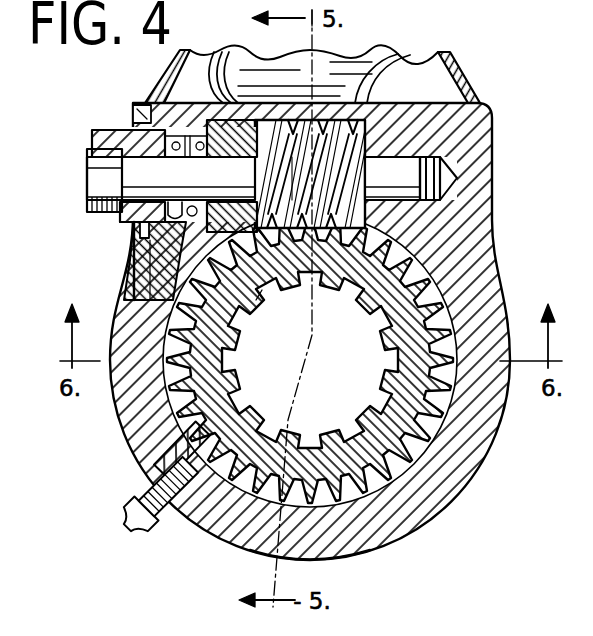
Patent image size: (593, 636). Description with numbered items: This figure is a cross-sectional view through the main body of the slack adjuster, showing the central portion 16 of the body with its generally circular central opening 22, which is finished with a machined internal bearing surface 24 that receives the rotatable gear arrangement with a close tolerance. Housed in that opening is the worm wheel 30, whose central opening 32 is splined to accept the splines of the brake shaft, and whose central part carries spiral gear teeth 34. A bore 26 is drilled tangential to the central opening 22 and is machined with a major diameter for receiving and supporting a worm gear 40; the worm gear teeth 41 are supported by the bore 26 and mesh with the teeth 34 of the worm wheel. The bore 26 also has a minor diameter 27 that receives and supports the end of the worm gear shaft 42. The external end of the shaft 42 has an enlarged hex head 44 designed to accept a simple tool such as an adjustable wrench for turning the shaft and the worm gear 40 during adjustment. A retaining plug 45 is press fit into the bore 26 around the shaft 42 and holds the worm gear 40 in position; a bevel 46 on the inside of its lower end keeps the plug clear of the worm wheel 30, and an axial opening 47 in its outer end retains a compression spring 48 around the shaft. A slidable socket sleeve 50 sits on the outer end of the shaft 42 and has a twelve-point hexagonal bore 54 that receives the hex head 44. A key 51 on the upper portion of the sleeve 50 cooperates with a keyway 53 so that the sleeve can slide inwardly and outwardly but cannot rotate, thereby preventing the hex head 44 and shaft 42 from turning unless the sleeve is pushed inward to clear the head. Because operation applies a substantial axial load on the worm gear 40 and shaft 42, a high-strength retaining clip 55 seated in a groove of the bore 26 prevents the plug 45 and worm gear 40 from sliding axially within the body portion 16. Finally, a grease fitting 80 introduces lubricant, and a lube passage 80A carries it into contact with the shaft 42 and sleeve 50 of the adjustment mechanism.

The central portion 16 is at (488, 150).
The central opening 22 is at (403, 464).
The internal bearing surface 24 is at (363, 512).
The bore 26 is at (326, 124).
The minor diameter 27 is at (436, 103).
The worm wheel 30 is at (430, 398).
The central opening 32 is at (372, 302).
The spiral gear teeth 34 is at (165, 445).
The worm gear 40 is at (412, 104).
The worm gear teeth 41 is at (292, 158).
The worm gear shaft 42 is at (228, 160).
The hex head 44 is at (86, 180).
The retaining plug 45 is at (190, 134).
The bevel 46 is at (265, 292).
The axial opening 47 is at (133, 270).
The compression spring 48 is at (214, 150).
The socket sleeve 50 is at (126, 226).
The key 51 is at (101, 128).
The keyway 53 is at (198, 136).
The hexagonal bore 54 is at (101, 218).
The retaining clip 55 is at (140, 108).
The grease fitting 80 is at (168, 528).
The lube passage 80A is at (145, 270).